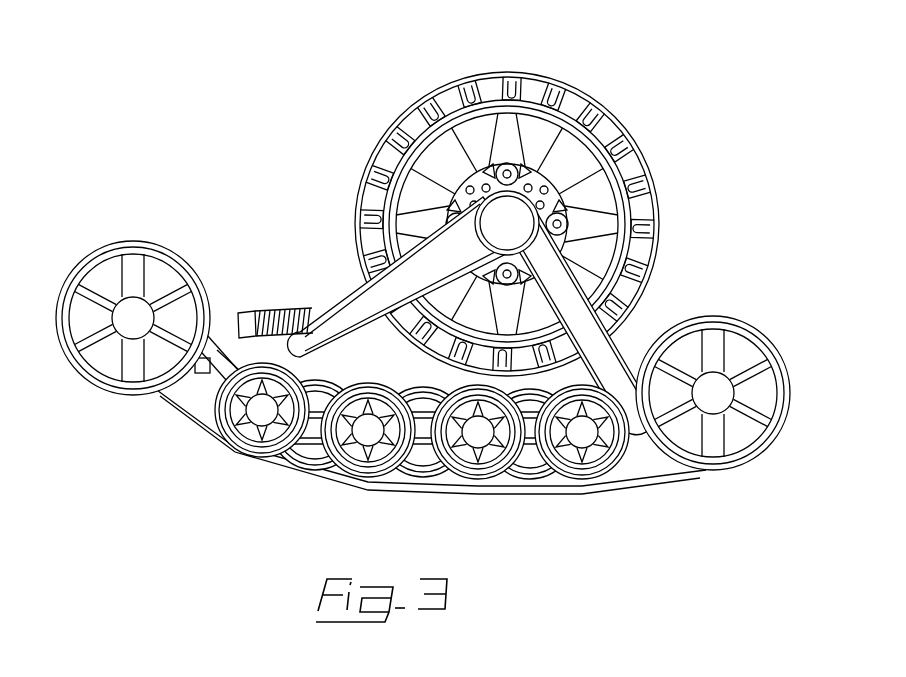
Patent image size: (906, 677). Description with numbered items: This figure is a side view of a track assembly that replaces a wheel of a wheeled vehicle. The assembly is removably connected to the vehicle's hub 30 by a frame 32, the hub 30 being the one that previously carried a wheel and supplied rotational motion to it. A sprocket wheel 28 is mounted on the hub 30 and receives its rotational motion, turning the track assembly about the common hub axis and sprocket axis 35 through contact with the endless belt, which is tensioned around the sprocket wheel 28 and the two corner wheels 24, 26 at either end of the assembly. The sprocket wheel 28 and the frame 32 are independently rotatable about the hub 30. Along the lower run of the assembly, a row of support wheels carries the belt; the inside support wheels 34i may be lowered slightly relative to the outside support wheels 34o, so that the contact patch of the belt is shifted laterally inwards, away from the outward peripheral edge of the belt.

The corner wheel 24 is at (132, 396).
The corner wheel 26 is at (719, 318).
The sprocket wheel 28 is at (511, 70).
The hub 30 is at (512, 218).
The frame 32 is at (337, 300).
The sprocket axis 35 is at (665, 222).
The outside support wheels 34o is at (262, 457).
The inside support wheels 34i is at (427, 384).